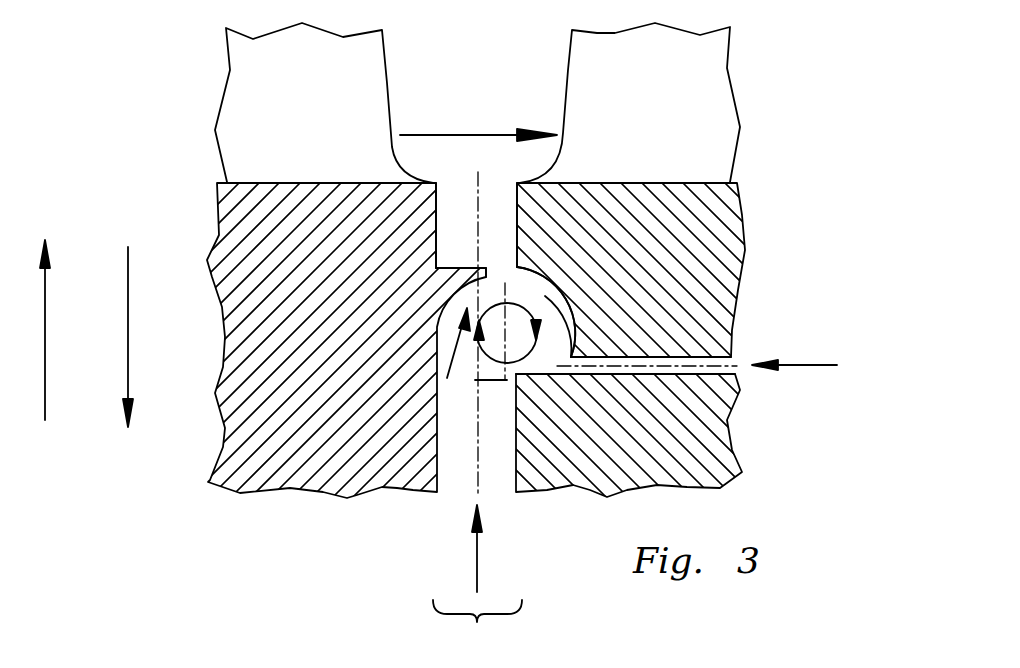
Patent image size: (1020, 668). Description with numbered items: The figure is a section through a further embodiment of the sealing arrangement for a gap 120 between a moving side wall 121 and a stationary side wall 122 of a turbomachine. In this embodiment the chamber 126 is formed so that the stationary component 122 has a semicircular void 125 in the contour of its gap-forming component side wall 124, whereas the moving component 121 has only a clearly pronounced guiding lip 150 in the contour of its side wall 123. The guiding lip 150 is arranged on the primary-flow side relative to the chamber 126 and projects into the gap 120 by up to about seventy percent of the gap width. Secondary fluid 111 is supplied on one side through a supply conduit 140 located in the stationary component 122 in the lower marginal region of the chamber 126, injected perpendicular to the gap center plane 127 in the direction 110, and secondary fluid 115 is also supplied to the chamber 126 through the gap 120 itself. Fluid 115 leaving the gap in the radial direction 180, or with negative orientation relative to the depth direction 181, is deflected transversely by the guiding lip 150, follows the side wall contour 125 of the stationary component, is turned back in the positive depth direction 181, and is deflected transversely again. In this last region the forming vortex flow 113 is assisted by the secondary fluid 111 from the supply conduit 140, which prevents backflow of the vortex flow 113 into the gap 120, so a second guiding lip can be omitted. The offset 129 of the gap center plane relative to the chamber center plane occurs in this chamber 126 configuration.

The direction of fluid flow (transverse) 110 is at (462, 130).
The secondary fluid 111 is at (825, 367).
The vortex flow 113 is at (530, 307).
The secondary fluid 115 is at (478, 545).
The gap 120 is at (477, 631).
The moving side wall 121 is at (245, 262).
The stationary side wall 122 is at (738, 218).
The side wall 123 is at (437, 232).
The gap-forming component side wall 124 is at (517, 245).
The semicircular void 125 is at (565, 360).
The chamber 126 is at (553, 303).
The gap center plane 127 is at (495, 170).
The offset 129 is at (495, 382).
The supply conduit 140 is at (678, 360).
The guiding lip 150 is at (453, 278).
The radial direction 180 is at (45, 340).
The depth direction 181 is at (128, 340).